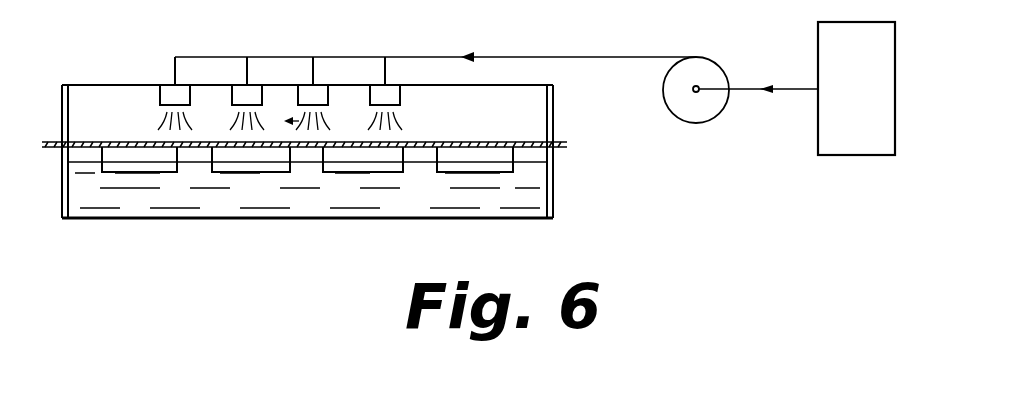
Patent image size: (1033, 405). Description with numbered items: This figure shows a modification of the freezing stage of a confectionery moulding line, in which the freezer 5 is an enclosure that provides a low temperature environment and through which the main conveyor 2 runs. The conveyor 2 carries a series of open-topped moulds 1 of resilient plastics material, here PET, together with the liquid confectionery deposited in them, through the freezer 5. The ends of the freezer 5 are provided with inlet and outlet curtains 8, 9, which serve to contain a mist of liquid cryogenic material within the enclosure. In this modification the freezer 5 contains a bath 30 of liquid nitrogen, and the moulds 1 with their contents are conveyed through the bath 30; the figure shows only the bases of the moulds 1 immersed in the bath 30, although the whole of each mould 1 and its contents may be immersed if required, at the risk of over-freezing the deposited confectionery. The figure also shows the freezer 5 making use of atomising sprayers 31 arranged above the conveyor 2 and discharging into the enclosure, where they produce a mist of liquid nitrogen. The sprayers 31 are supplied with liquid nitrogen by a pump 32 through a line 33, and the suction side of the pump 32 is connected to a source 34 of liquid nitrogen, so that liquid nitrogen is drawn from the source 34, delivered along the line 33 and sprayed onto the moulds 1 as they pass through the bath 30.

The open-topped moulds 1 is at (262, 170).
The main conveyor 2 is at (88, 148).
The freezer tunnel 5 is at (122, 76).
The inlet curtain 8 is at (553, 198).
The outlet curtain 9 is at (62, 112).
The bath 30 is at (163, 198).
The atomising sprayers 31 is at (390, 98).
The pump 32 is at (690, 112).
The line 33 is at (573, 56).
The source of liquid nitrogen 34 is at (862, 142).